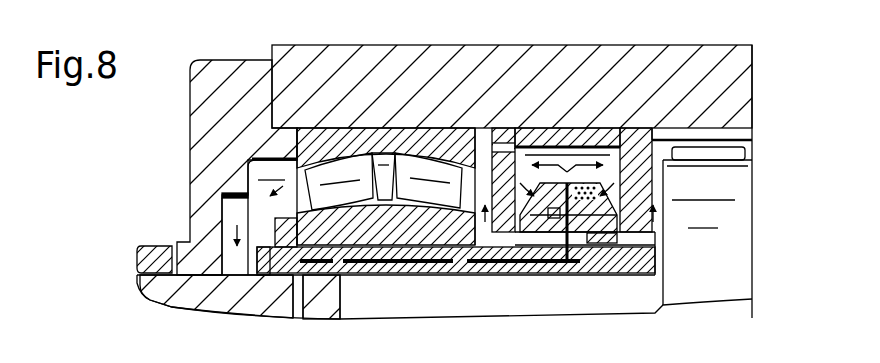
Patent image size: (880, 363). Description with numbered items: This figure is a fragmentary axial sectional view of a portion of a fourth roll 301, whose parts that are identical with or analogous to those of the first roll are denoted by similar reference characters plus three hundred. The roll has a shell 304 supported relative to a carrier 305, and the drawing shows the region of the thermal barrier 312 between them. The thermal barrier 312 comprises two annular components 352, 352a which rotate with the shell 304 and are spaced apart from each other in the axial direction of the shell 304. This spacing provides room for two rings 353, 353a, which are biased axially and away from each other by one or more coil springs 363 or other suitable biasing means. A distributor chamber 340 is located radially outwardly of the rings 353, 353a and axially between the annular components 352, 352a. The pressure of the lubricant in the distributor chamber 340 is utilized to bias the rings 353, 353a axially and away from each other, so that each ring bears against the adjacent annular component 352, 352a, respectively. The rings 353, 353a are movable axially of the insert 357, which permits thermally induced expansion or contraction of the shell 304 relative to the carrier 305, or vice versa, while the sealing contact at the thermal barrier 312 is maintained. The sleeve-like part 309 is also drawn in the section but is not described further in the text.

The fourth roll 301 is at (160, 205).
The shell 304 is at (275, 52).
The carrier 305 is at (505, 312).
The inner sleeve 309 is at (250, 163).
The thermal barrier 312 is at (612, 110).
The distributor chamber 340 is at (552, 145).
The annular component 352 is at (501, 140).
The annular component 352a is at (652, 152).
The ring 353 is at (464, 178).
The ring 353a is at (602, 245).
The insert 357 is at (482, 270).
The coil spring 363 is at (575, 243).